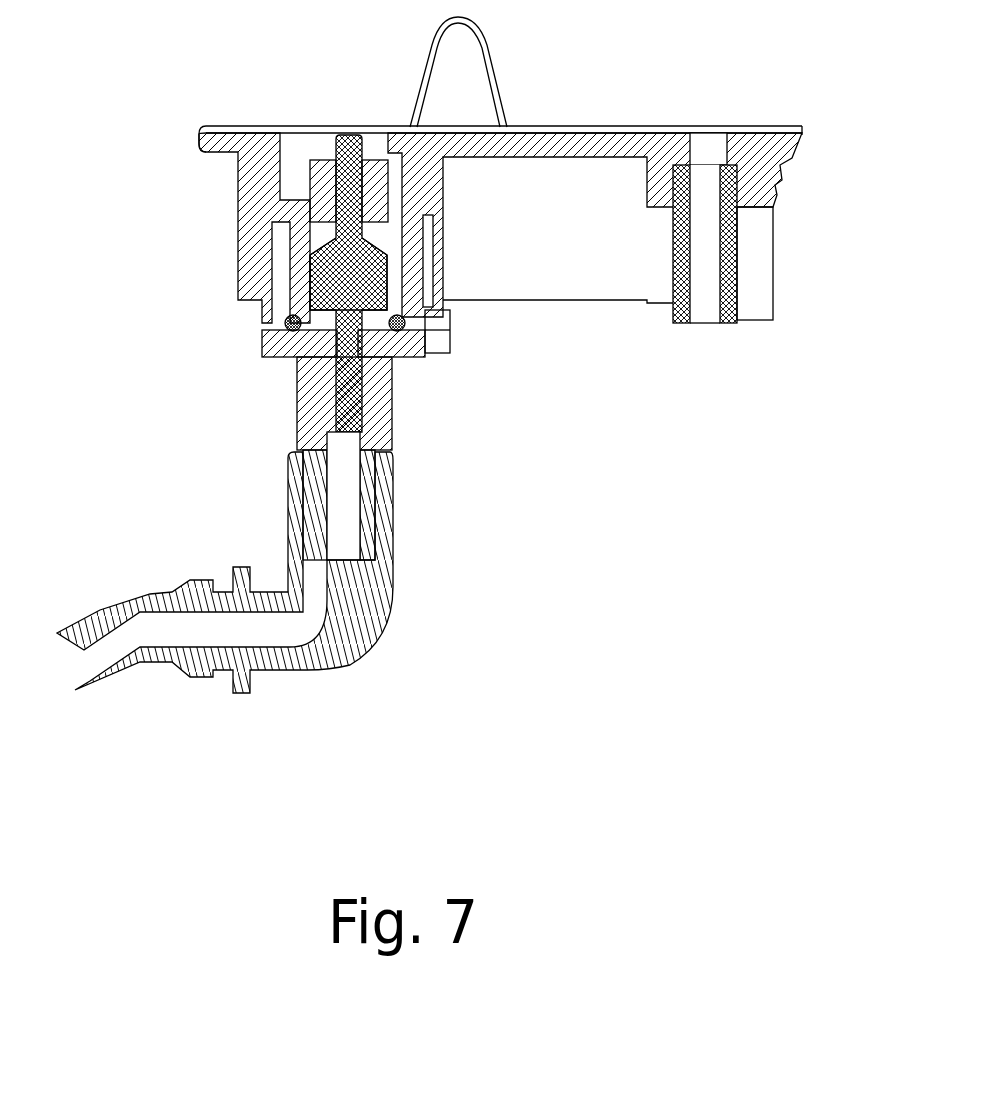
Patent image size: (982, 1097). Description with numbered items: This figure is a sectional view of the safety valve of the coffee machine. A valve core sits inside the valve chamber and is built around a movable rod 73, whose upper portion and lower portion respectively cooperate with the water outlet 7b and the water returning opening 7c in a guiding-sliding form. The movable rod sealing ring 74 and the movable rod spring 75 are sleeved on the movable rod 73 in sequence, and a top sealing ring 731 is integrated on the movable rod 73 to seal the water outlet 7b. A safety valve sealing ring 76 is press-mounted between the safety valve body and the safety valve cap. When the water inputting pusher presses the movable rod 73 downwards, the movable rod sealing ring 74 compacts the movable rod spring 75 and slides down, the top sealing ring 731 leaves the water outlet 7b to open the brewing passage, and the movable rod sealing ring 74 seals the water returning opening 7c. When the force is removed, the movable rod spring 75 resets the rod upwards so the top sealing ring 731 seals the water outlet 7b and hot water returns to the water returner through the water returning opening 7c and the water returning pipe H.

The water outlet 7b is at (328, 147).
The top sealing ring 731 is at (320, 262).
The safety valve sealing ring 76 is at (285, 321).
The movable rod spring 75 is at (263, 387).
The movable rod sealing ring 74 is at (537, 343).
The movable rod 73 is at (465, 428).
The water returning opening 7c is at (342, 480).
The water returning pipe H is at (478, 667).